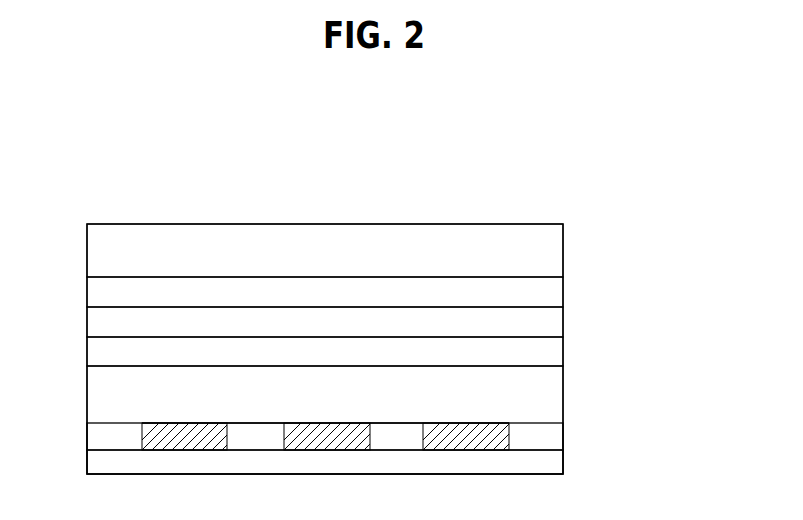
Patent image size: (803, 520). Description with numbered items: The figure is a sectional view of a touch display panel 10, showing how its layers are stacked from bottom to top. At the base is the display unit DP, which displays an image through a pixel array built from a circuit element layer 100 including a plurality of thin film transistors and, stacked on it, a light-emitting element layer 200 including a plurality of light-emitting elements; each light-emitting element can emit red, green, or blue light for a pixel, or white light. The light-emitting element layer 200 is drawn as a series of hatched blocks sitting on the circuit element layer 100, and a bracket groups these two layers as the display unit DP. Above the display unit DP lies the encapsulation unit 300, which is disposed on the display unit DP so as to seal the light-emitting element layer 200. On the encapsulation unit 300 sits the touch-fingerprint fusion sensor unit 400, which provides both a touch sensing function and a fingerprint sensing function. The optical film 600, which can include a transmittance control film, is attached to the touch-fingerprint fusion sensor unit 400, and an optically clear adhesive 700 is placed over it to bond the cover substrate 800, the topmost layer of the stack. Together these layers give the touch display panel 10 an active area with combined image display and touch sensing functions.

The touch display panel 10 is at (92, 209).
The circuit element layer 100 is at (563, 462).
The light-emitting element layer 200 is at (509, 435).
The encapsulation unit 300 is at (563, 399).
The touch-fingerprint fusion sensor unit 400 is at (563, 353).
The optical film 600 is at (563, 319).
The optically clear adhesive 700 is at (563, 290).
The cover substrate 800 is at (563, 249).
The display unit DP is at (641, 422).